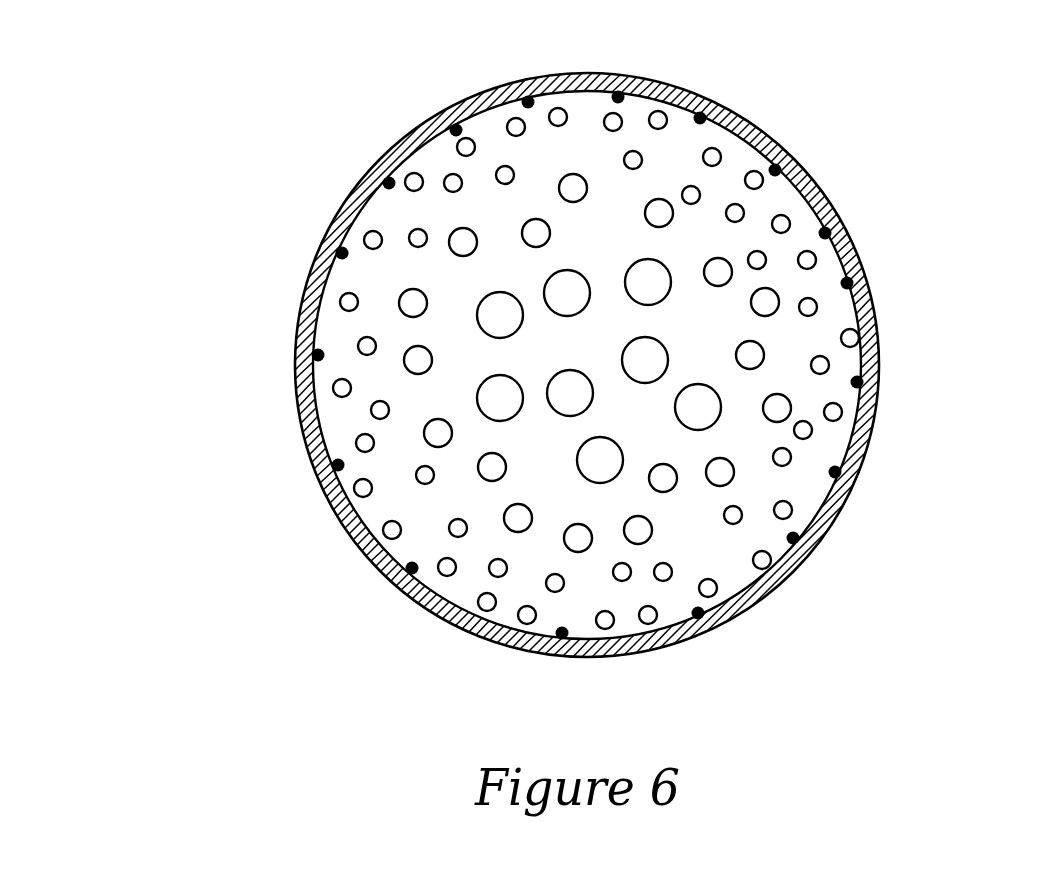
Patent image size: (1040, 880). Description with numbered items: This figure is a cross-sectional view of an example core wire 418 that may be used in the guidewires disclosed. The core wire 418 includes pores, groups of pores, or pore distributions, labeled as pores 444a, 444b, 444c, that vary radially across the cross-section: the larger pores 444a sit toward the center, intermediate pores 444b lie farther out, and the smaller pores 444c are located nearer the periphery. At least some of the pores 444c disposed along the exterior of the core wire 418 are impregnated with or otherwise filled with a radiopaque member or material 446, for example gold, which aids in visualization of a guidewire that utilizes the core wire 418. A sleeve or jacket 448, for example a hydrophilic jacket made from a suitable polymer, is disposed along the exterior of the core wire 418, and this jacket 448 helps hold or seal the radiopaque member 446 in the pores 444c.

The core wire 418 is at (582, 338).
The pores 444a is at (500, 398).
The pores 444b is at (463, 240).
The pores 444c is at (453, 182).
The radiopaque member 446 is at (528, 97).
The jacket 448 is at (864, 425).